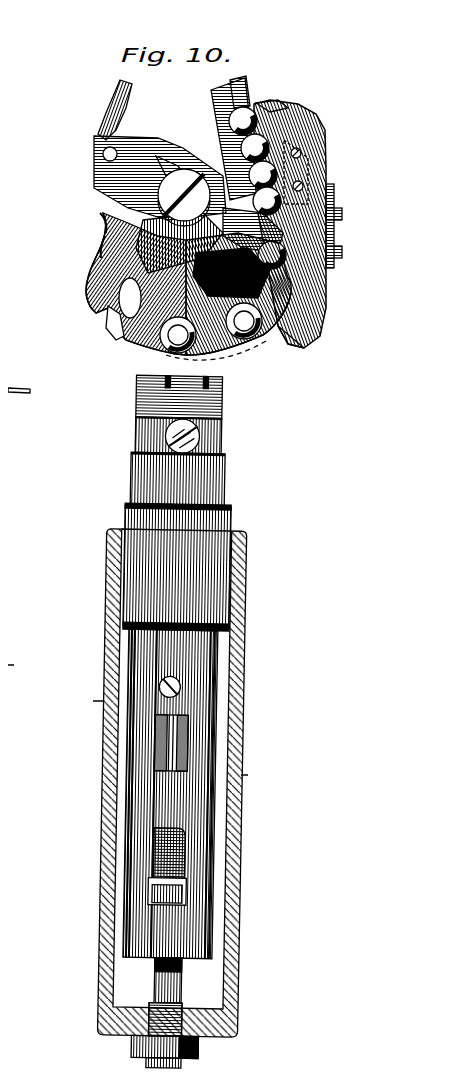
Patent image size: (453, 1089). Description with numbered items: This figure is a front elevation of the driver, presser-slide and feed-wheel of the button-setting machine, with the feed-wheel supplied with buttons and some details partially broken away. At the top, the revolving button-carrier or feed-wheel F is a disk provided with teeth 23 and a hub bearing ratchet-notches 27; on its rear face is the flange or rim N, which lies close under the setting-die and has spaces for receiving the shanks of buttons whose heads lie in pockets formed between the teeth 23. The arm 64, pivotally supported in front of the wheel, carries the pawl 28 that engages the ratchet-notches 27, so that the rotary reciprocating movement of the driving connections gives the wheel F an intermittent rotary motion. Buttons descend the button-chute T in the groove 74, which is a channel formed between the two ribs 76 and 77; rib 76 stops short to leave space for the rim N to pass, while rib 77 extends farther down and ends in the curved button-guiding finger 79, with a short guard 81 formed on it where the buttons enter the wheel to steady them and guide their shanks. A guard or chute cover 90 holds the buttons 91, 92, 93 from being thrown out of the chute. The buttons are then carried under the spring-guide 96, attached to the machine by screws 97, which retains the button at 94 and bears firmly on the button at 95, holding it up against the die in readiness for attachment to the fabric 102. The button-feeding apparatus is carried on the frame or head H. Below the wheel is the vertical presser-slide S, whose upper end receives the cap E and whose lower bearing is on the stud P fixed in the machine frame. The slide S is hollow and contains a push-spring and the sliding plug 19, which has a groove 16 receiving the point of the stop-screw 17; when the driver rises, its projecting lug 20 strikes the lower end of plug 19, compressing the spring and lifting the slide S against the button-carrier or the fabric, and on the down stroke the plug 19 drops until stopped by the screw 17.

The button-chute T is at (224, 139).
The groove 74 is at (220, 74).
The rib 77 is at (250, 93).
The rib 76 is at (232, 110).
The button 91 is at (236, 134).
The pawl 28 is at (153, 152).
The arm 64 is at (171, 194).
The guard or chute cover 90 is at (315, 152).
The button 92 is at (318, 183).
The screws 97 is at (330, 208).
The guard 81 is at (280, 228).
The button 93 is at (278, 262).
The button-guiding finger 79 is at (286, 304).
The button position 94 is at (250, 325).
The button position 95 is at (150, 331).
The spring-guide 96 is at (213, 343).
The teeth 23 is at (83, 284).
The ratchet-notches 27 is at (92, 230).
The flange or rim N is at (95, 250).
The feed-wheel F is at (87, 262).
The fabric 102 is at (23, 375).
The cap E is at (208, 433).
The presser-slide S is at (210, 478).
The stop-screw 17 is at (173, 673).
The groove 16 is at (185, 722).
The sliding plug 19 is at (150, 743).
The projecting part or lug 20 is at (180, 847).
The frame or head H is at (110, 1017).
The stud P is at (163, 1057).